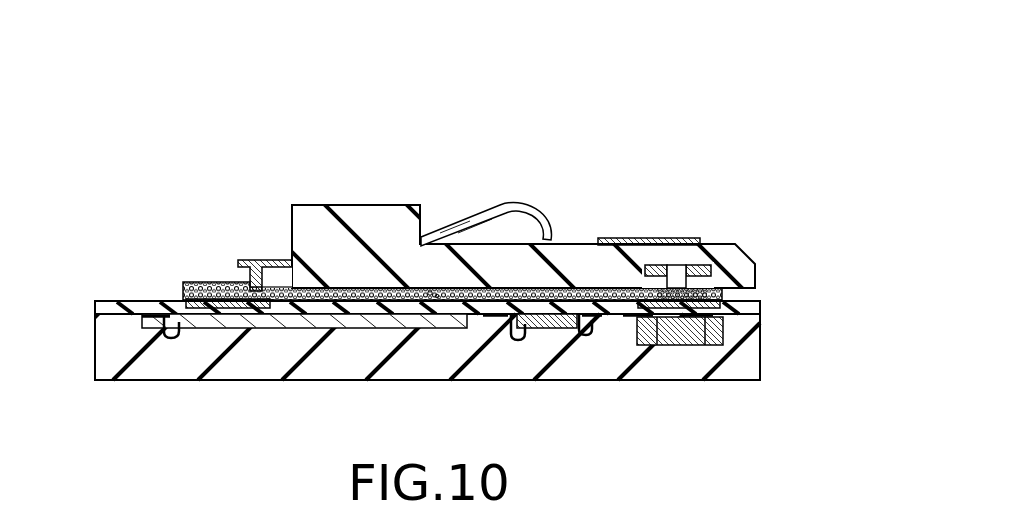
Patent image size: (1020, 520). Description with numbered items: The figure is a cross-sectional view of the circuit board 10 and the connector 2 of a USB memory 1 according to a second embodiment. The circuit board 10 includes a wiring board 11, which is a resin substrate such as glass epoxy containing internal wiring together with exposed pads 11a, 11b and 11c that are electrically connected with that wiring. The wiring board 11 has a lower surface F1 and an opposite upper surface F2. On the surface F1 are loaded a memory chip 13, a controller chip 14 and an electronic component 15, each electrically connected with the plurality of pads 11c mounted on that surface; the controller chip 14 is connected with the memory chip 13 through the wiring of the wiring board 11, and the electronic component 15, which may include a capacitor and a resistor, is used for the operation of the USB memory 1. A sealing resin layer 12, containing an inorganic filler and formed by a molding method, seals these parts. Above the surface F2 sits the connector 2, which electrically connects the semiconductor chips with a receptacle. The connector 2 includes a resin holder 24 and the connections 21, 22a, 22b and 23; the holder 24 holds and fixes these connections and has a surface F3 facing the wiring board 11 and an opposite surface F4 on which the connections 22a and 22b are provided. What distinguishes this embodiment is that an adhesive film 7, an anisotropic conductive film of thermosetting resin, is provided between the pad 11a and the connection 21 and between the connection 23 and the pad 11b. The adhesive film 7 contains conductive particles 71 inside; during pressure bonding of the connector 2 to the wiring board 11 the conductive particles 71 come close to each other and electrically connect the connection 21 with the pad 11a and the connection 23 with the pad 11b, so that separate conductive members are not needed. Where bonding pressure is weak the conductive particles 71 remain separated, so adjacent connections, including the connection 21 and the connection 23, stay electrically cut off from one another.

The USB memory 1 is at (706, 90).
The connector 2 is at (628, 149).
The adhesive film 7 is at (362, 300).
The conductive particles 71 is at (430, 292).
The circuit board 10 is at (92, 301).
The wiring board 11 is at (130, 300).
The pad 11a is at (207, 292).
The pad 11b is at (718, 293).
The pads 11c is at (152, 323).
The sealing resin layer 12 is at (207, 350).
The memory chip 13 is at (283, 322).
The controller chip 14 is at (545, 322).
The electronic component 15 is at (680, 332).
The connection 21 is at (252, 260).
The connection 22a is at (497, 208).
The connection 22b is at (657, 285).
The connection 23 is at (630, 240).
The holder 24 is at (378, 223).
The surface F1 is at (770, 317).
The surface F2 is at (768, 297).
The surface F3 is at (760, 287).
The surface F4 is at (752, 239).